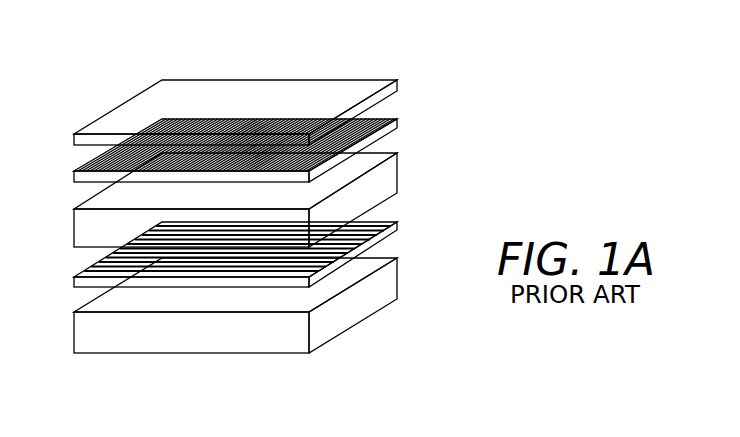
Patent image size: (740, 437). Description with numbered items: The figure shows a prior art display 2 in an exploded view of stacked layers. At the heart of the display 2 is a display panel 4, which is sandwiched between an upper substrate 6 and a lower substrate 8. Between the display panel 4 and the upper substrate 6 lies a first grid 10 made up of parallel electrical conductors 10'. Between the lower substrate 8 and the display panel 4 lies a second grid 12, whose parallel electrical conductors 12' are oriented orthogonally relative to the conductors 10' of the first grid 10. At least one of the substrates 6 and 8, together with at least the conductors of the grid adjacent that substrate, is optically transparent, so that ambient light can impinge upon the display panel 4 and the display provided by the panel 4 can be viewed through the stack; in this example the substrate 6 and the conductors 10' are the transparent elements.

The display 2 is at (312, 60).
The substrate 6 is at (372, 80).
The first grid 10 is at (246, 143).
The parallel electrical conductors 10' is at (213, 145).
The display panel 4 is at (399, 178).
The second grid 12 is at (247, 247).
The parallel electrical conductors 12' is at (212, 249).
The substrate 8 is at (399, 281).